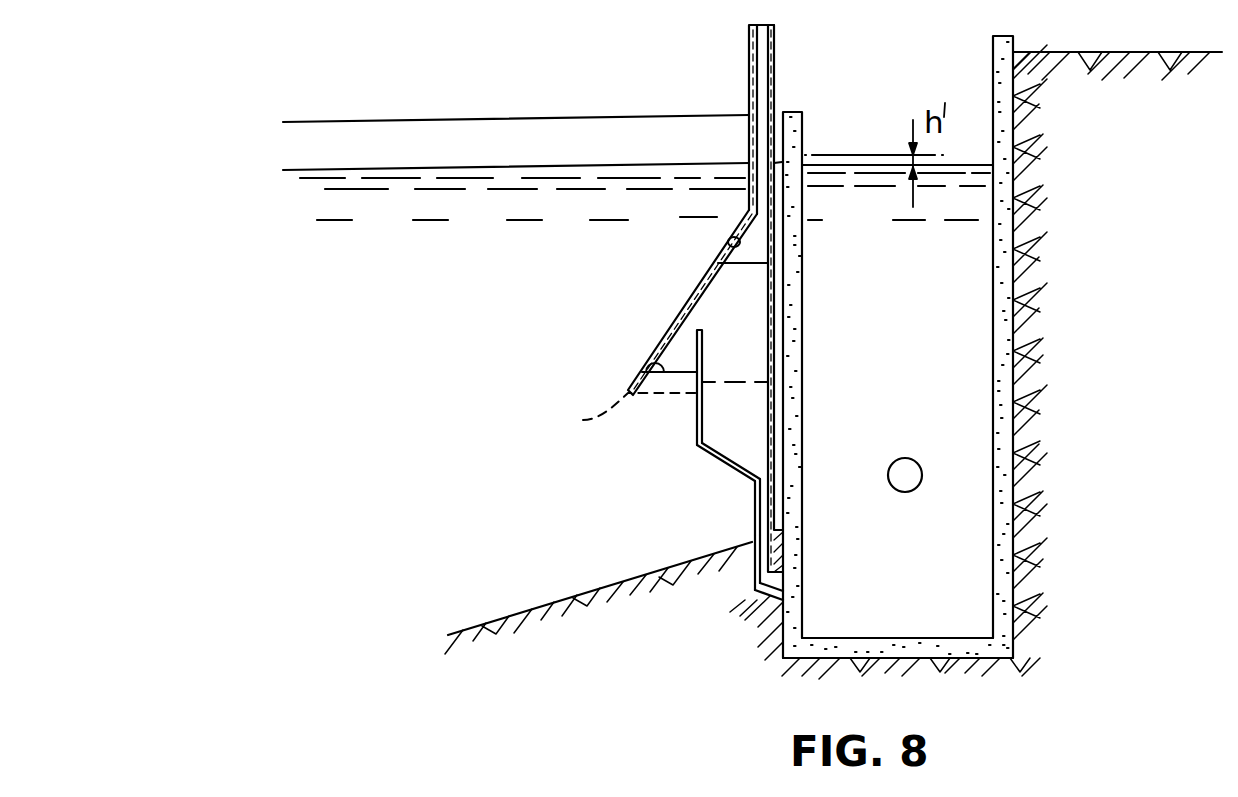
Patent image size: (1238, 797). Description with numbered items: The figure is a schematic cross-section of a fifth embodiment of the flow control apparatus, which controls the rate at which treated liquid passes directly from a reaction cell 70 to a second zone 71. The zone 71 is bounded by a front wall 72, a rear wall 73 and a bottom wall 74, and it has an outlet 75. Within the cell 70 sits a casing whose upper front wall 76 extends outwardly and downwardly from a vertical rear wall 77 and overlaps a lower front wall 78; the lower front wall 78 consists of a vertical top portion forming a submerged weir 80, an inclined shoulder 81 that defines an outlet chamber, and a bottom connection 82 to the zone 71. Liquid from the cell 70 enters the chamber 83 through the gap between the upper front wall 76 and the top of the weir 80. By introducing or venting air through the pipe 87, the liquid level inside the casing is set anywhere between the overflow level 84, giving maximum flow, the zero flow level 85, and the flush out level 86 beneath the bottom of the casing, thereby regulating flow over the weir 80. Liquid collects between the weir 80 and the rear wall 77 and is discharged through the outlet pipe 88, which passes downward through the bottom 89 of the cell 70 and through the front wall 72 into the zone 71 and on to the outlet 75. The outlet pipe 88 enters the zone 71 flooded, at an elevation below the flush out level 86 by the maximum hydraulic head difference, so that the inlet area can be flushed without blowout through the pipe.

The reaction cell 70 is at (520, 439).
The second zone 71 is at (905, 365).
The front wall 72 is at (800, 113).
The rear wall 73 is at (1000, 36).
The bottom wall 74 is at (925, 638).
The outlet 75 is at (918, 487).
The upper front wall 76 is at (682, 310).
The vertical rear wall 77 is at (775, 312).
The lower front wall 78 is at (697, 447).
The submerged weir 80 is at (700, 372).
The inclined shoulder 81 is at (728, 470).
The bottom connection 82 is at (752, 530).
The chamber 83 is at (729, 241).
The overflow level 84 is at (746, 263).
The zero flow level 85 is at (650, 370).
The flush out level 86 is at (620, 414).
The pipe 87 is at (748, 60).
The outlet pipe 88 is at (800, 590).
The bottom 89 is at (543, 606).